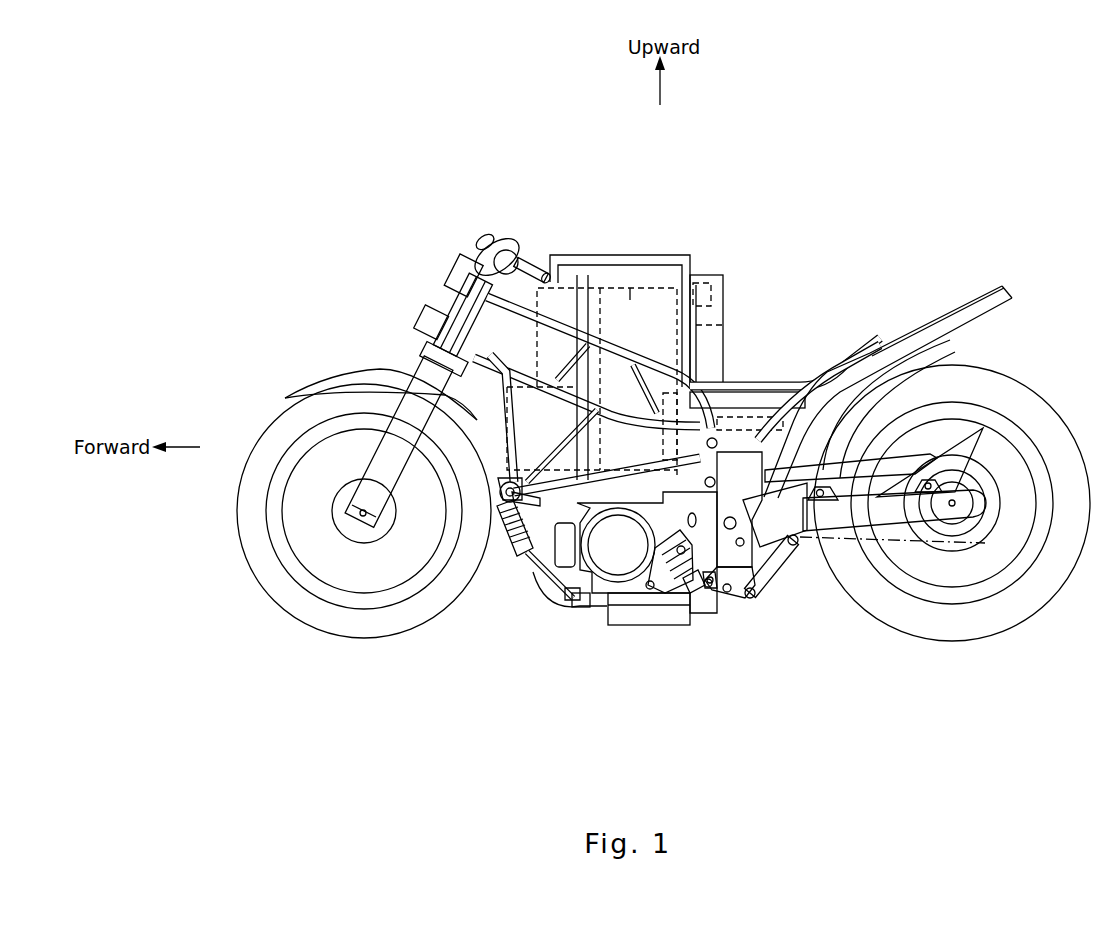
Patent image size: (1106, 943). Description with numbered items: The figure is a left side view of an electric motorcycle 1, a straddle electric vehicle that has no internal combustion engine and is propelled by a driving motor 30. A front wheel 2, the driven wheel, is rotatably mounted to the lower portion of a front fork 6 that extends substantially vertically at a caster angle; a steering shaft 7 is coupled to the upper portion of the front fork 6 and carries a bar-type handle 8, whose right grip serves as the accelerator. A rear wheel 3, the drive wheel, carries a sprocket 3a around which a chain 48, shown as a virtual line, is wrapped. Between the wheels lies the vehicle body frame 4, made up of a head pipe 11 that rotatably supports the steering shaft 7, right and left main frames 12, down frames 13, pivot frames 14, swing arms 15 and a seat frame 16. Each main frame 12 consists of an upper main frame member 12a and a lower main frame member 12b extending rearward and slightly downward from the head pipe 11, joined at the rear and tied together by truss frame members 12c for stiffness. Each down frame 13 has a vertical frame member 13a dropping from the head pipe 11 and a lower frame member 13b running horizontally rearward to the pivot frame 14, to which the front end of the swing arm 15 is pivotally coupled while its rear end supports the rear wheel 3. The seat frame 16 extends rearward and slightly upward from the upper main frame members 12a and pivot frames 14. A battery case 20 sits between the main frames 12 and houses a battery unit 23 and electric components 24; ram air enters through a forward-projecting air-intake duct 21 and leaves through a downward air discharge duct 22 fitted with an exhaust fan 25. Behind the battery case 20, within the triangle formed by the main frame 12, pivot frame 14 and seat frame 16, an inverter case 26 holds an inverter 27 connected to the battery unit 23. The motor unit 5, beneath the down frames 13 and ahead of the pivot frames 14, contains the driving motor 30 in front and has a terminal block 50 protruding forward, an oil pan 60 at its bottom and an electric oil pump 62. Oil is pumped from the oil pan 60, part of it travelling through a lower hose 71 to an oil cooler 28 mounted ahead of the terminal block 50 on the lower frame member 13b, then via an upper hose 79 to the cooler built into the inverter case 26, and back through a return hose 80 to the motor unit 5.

The electric motorcycle 1 is at (950, 193).
The front wheel 2 is at (296, 600).
The rear wheel 3 is at (1025, 600).
The sprocket 3a is at (972, 545).
The vehicle body frame 4 is at (955, 308).
The motor unit 5 is at (680, 630).
The front fork 6 is at (420, 392).
The steering shaft 7 is at (472, 268).
The bar-type handle 8 is at (534, 256).
The head pipe 11 is at (446, 292).
The main frame 12 is at (753, 195).
The upper main frame member 12a is at (600, 385).
The lower main frame member 12b is at (603, 350).
The truss frame member 12c is at (553, 360).
The down frame 13 is at (450, 668).
The vertical frame member 13a is at (479, 456).
The lower frame member 13b is at (540, 598).
The pivot frame 14 is at (733, 558).
The swing arm 15 is at (835, 520).
The seat frame 16 is at (910, 336).
The battery case 20 is at (724, 283).
The air-intake duct 21 is at (432, 306).
The air discharge duct 22 is at (714, 274).
The battery unit 23 is at (660, 327).
The electric components 24 is at (682, 257).
The exhaust fan 25 is at (706, 293).
The inverter case 26 is at (857, 348).
The inverter 27 is at (786, 417).
The oil cooler 28 is at (509, 542).
The driving motor 30 is at (627, 558).
The chain 48 is at (905, 552).
The terminal block 50 is at (570, 560).
The oil pan 60 is at (653, 613).
The electric oil pump 62 is at (675, 588).
The lower hose 71 is at (552, 606).
The upper hose 79 is at (623, 474).
The return hose 80 is at (650, 483).